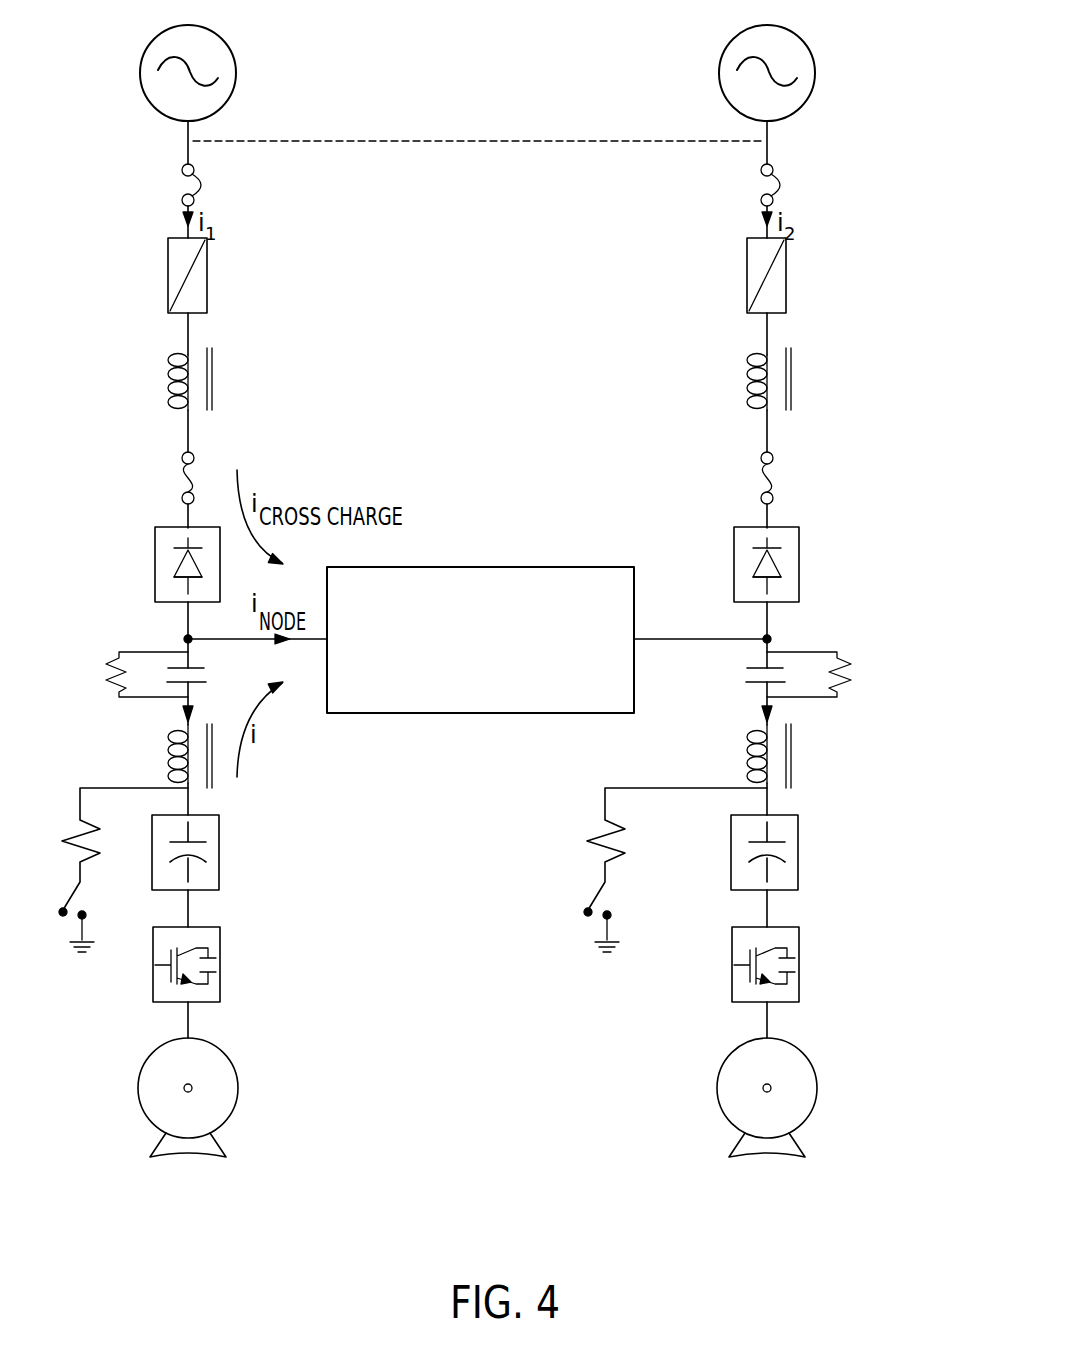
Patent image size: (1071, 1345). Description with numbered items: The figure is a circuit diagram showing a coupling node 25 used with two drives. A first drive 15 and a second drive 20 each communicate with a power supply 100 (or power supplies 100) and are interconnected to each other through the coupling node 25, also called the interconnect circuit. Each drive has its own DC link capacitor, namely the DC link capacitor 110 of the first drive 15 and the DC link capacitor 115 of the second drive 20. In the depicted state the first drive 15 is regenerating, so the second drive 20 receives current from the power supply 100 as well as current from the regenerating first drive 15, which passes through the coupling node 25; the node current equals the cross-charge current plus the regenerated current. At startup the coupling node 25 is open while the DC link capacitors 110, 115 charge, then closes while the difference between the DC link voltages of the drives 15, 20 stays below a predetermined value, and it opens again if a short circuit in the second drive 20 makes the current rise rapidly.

The power supply 100 is at (232, 44).
The coupling node 25 is at (490, 567).
The DC link capacitor 110 is at (219, 843).
The DC link capacitor 115 is at (826, 852).
The first drive 15 is at (194, 1157).
The second drive 20 is at (728, 1130).